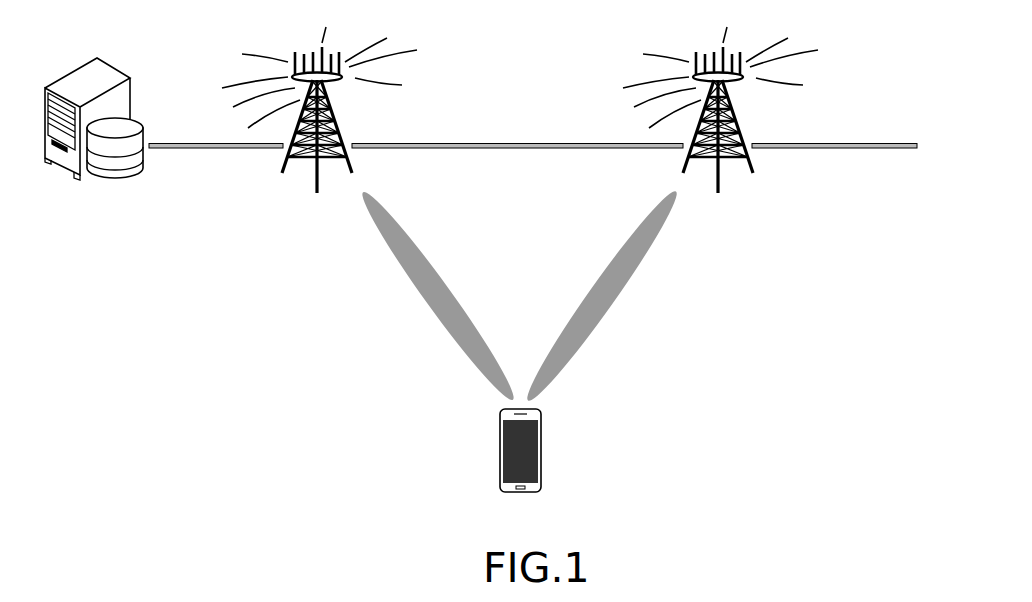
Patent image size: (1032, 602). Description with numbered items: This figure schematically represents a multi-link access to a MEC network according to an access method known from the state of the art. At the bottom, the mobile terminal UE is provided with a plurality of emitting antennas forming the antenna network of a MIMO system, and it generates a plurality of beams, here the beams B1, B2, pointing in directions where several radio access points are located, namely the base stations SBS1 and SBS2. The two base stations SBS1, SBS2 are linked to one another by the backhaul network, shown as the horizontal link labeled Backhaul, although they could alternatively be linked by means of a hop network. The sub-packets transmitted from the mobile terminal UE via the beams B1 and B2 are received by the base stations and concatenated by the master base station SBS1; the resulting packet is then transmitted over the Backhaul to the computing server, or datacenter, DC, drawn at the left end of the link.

The computing server DC is at (85, 104).
The master base station SBS1 is at (319, 127).
The base station SBS2 is at (720, 126).
The backhaul network Backhaul is at (533, 131).
The beam B1 is at (438, 296).
The beam B2 is at (601, 296).
The mobile terminal UE is at (546, 452).